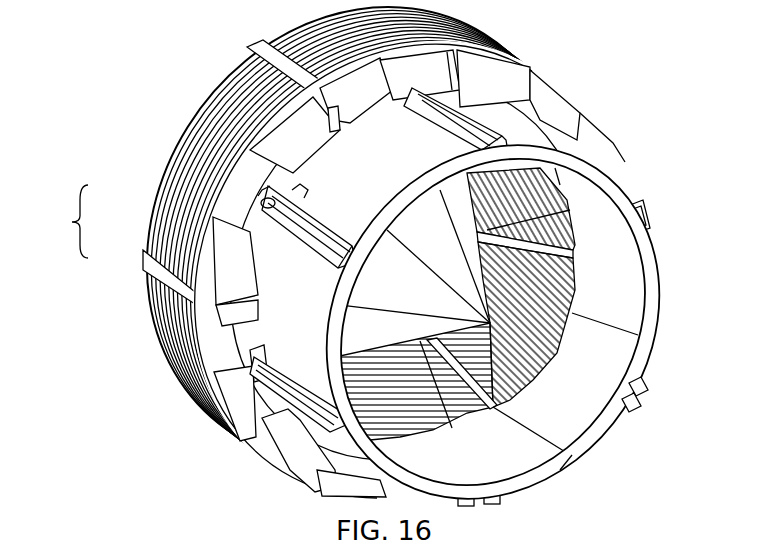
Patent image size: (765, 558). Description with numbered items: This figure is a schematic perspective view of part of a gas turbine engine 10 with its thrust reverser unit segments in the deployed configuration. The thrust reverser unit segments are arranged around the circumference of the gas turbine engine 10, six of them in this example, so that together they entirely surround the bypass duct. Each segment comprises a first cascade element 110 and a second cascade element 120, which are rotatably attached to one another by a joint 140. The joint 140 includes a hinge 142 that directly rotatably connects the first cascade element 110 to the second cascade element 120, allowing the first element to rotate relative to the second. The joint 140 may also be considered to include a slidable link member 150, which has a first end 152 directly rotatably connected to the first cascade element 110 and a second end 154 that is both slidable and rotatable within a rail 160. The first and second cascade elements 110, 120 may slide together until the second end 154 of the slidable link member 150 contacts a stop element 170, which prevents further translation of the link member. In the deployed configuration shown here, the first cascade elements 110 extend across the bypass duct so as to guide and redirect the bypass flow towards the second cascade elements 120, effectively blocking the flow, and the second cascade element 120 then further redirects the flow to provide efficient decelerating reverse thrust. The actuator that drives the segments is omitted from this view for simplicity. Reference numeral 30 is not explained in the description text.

The gas turbine engine 10 is at (636, 105).
The rotor 30 is at (492, 322).
The first cascade element 110 is at (640, 338).
The second cascade element 120 is at (178, 162).
The joint 140 is at (448, 38).
The hinge 142 is at (194, 398).
The slidable link member 150 is at (72, 222).
The first end 152 is at (293, 190).
The second end 154 is at (267, 207).
The rail 160 is at (297, 260).
The stop element 170 is at (295, 192).